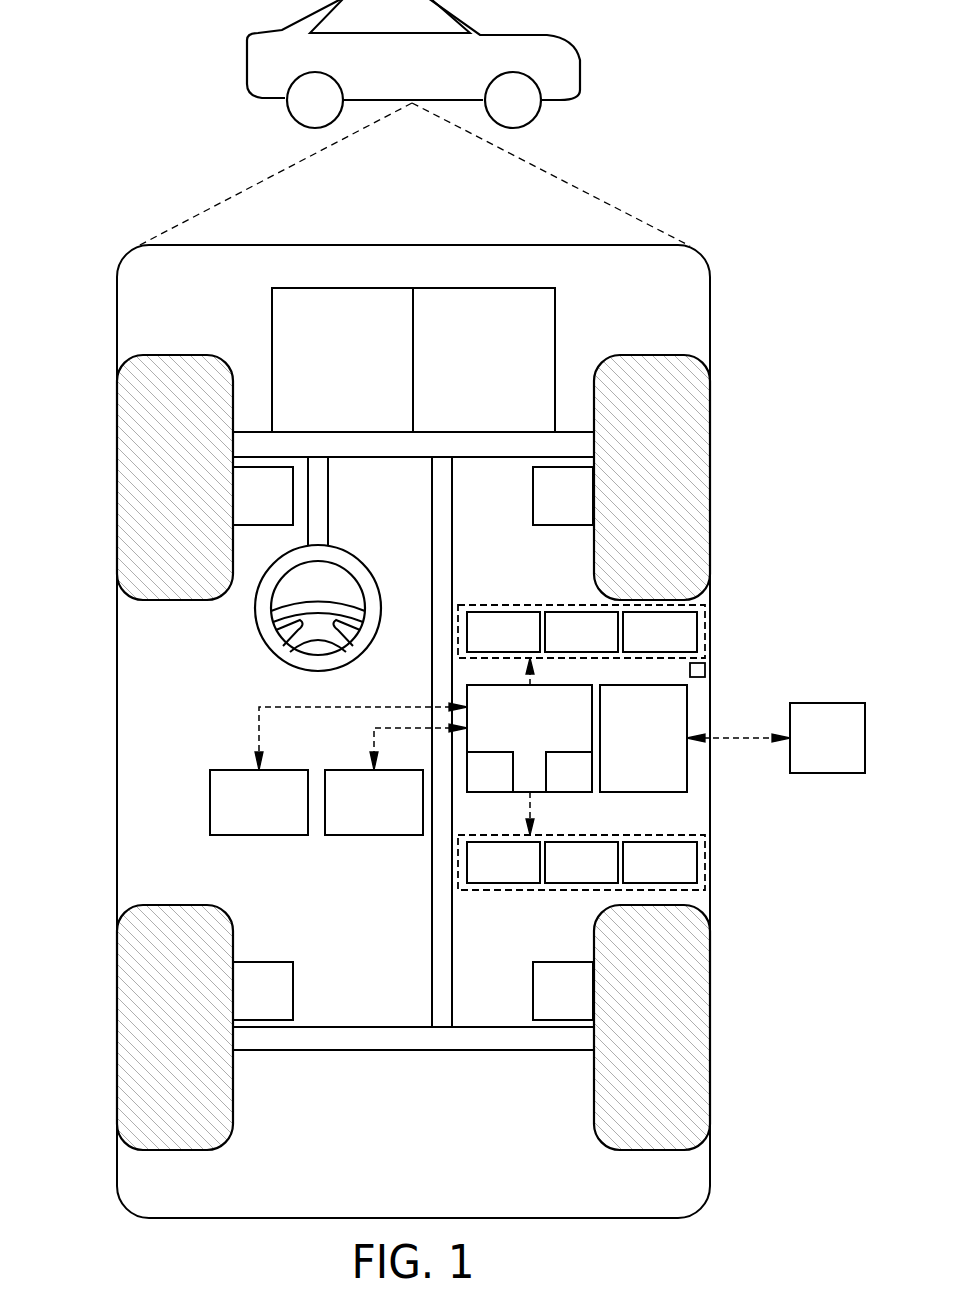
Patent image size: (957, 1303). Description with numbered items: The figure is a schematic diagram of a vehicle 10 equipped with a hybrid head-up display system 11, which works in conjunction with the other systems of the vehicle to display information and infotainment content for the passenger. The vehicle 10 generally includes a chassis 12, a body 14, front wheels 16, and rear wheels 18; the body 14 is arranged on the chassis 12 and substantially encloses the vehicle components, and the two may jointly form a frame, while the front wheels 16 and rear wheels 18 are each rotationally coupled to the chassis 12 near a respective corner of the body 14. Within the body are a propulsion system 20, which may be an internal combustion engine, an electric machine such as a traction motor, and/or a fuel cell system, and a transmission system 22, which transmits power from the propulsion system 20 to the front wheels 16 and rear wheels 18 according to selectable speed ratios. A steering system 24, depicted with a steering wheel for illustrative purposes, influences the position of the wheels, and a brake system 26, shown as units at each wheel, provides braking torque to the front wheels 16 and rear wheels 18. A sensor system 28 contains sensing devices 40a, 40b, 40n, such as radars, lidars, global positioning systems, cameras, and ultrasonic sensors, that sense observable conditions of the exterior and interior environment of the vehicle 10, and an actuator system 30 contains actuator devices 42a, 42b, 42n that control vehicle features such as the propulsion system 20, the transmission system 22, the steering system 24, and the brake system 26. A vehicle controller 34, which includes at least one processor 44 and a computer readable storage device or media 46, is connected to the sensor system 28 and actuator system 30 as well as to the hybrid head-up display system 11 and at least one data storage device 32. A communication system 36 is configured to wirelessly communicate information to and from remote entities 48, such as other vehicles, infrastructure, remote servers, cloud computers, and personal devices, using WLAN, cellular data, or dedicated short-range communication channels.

The vehicle 10 is at (399, 78).
The hybrid head-up display system 11 is at (245, 813).
The chassis 12 is at (432, 935).
The body 14 is at (117, 735).
The front wheels 16 is at (176, 355).
The rear wheels 18 is at (175, 1150).
The propulsion system 20 is at (329, 375).
The transmission system 22 is at (470, 375).
The steering system 24 is at (347, 494).
The brake system 26 is at (249, 506).
The sensor system 28 is at (581, 618).
The actuator system 30 is at (581, 887).
The data storage device 32 is at (360, 813).
The vehicle controller 34 is at (529, 746).
The communication system 36 is at (629, 750).
The sensing device 40a is at (483, 645).
The sensing device 40b is at (561, 645).
The sensing device 40n is at (640, 645).
The actuator device 42a is at (483, 875).
The actuator device 42b is at (561, 875).
The actuator device 42n is at (640, 875).
The processor 44 is at (476, 783).
The computer readable storage device or media 46 is at (555, 783).
The remote entities 48 is at (813, 748).